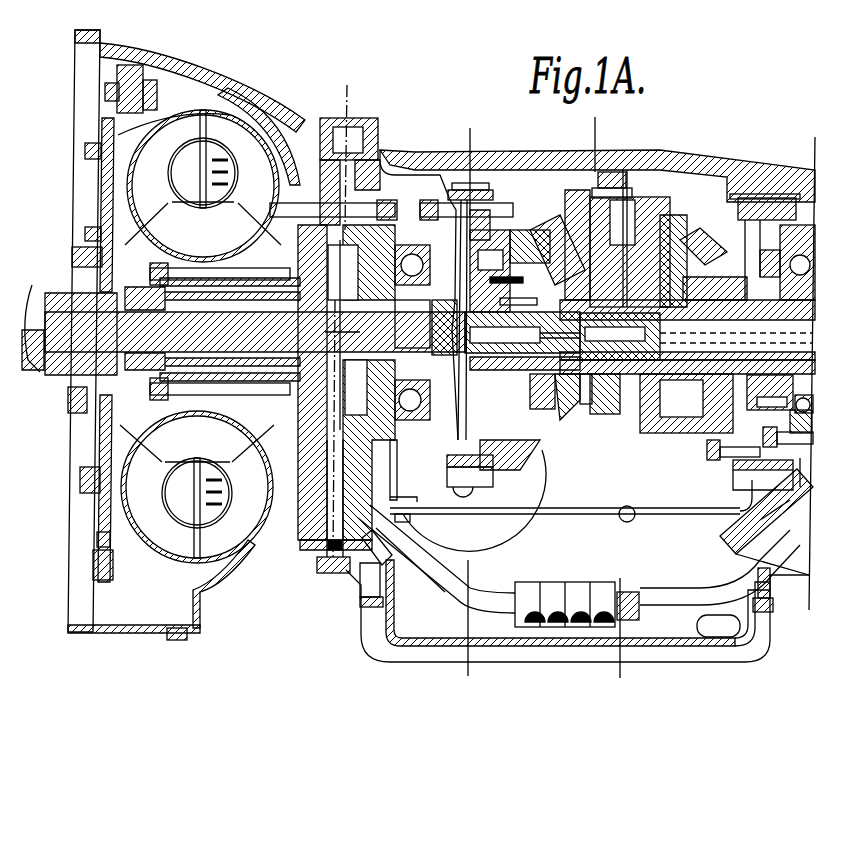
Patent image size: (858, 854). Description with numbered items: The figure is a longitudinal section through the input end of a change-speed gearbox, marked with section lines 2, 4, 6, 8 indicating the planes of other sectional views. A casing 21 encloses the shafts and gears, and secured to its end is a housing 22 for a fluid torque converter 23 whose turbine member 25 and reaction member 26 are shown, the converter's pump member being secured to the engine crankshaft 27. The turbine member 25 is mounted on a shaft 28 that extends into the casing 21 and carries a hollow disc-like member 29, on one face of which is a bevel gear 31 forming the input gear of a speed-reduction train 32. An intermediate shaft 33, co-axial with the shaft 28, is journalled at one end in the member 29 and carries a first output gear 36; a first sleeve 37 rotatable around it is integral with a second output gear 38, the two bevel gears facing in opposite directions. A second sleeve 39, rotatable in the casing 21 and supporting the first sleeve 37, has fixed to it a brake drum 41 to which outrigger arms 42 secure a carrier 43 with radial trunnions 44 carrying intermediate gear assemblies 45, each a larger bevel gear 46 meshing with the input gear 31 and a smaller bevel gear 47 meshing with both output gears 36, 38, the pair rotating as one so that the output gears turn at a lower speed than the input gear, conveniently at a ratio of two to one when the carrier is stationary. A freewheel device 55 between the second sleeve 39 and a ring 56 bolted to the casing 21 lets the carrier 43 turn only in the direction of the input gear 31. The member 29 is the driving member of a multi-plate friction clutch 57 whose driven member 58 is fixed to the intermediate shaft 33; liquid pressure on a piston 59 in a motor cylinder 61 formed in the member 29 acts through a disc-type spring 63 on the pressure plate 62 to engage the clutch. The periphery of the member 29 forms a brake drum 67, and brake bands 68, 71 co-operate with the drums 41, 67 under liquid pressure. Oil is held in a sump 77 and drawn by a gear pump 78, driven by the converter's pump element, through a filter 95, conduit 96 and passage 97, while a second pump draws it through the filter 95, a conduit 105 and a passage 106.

The section line 2- 2 is at (595, 117).
The section line 4- 4 is at (347, 85).
The section line 6- 6 is at (470, 128).
The section line 8- 8 is at (333, 575).
The casing 21 is at (722, 154).
The housing 22 is at (298, 110).
The fluid torque converter 23 is at (108, 210).
The turbine member 25 is at (127, 183).
The reaction member 26 is at (218, 242).
The crankshaft 27 is at (40, 290).
The shaft 28 is at (335, 300).
The hollow disc-like member 29 is at (446, 470).
The bevel gear 31 is at (545, 410).
The speed-reduction train 32 is at (684, 227).
The intermediate shaft 33 is at (612, 374).
The first output gear 36 is at (575, 410).
The first sleeve 37 is at (812, 372).
The second output gear 38 is at (680, 433).
The second sleeve 39 is at (712, 460).
The brake drum 41 is at (785, 198).
The outrigger arms 42 is at (660, 433).
The carrier 43 is at (600, 380).
The radial trunnions 44 is at (640, 200).
The intermediate gear assemblies 45 is at (556, 235).
The larger bevel gear 46 is at (540, 240).
The smaller bevel gear 47 is at (680, 318).
The freewheel device 55 is at (812, 400).
The ring 56 is at (812, 422).
The multi-plate friction clutch 57 is at (445, 228).
The driven member 58 is at (536, 440).
The piston 59 is at (434, 340).
The motor cylinder 61 is at (372, 292).
The pressure plate 62 is at (457, 438).
The disc-type spring 63 is at (412, 324).
The brake drum 67 is at (500, 205).
The brake band 68 is at (752, 198).
The brake band 71 is at (490, 190).
The sump 77 is at (655, 605).
The gear pump 78 is at (242, 418).
The filter 95 is at (562, 580).
The conduit 96 is at (490, 592).
The passage 97 is at (312, 552).
The conduit 105 is at (708, 562).
The passage 106 is at (798, 518).